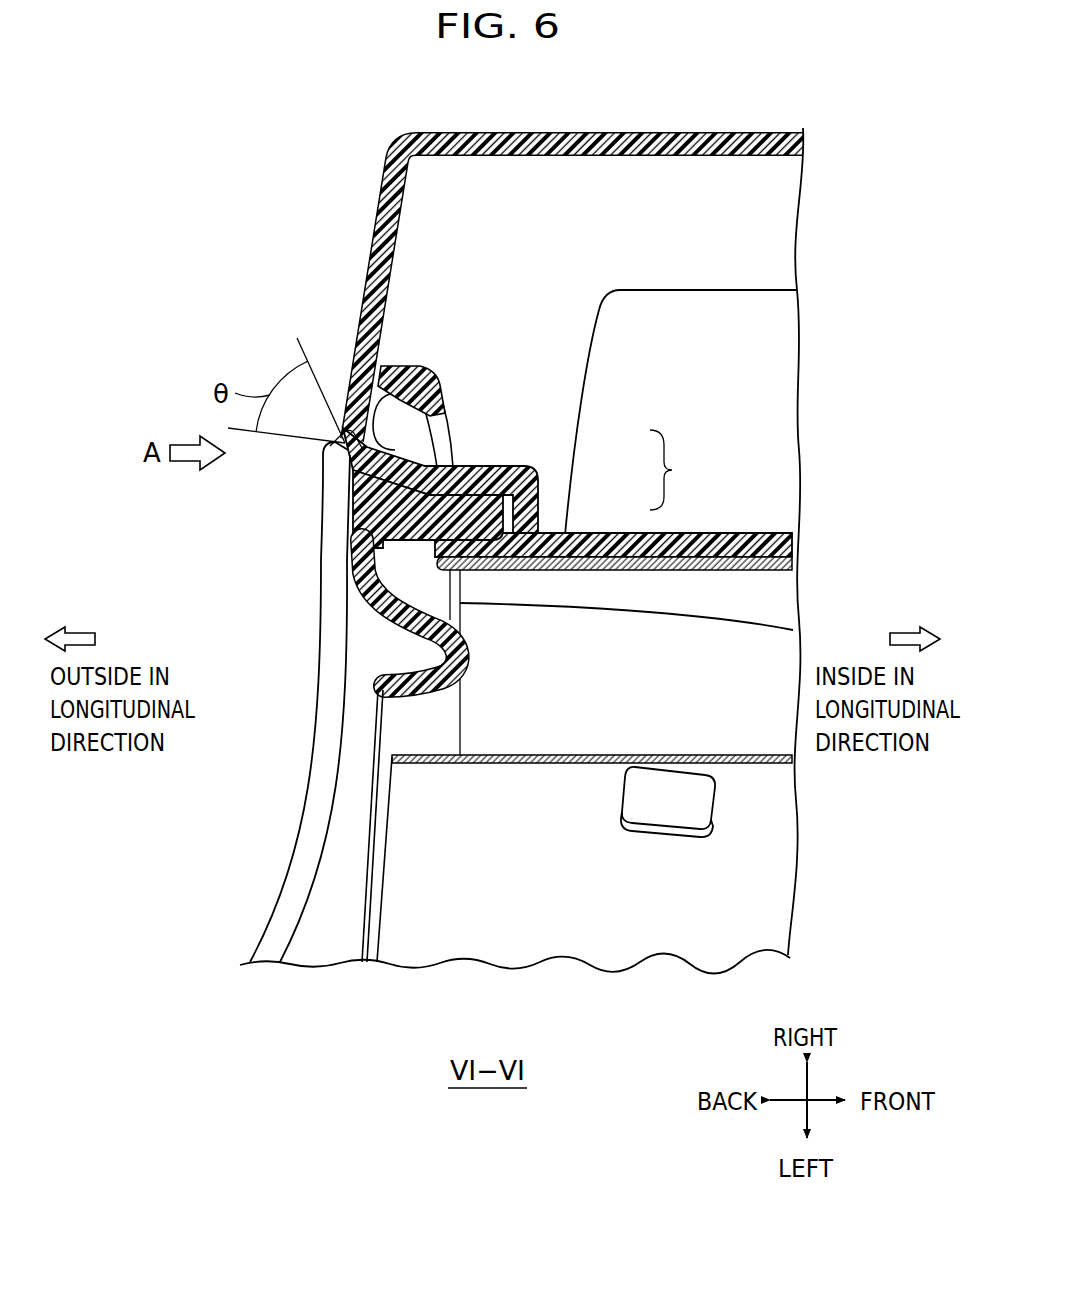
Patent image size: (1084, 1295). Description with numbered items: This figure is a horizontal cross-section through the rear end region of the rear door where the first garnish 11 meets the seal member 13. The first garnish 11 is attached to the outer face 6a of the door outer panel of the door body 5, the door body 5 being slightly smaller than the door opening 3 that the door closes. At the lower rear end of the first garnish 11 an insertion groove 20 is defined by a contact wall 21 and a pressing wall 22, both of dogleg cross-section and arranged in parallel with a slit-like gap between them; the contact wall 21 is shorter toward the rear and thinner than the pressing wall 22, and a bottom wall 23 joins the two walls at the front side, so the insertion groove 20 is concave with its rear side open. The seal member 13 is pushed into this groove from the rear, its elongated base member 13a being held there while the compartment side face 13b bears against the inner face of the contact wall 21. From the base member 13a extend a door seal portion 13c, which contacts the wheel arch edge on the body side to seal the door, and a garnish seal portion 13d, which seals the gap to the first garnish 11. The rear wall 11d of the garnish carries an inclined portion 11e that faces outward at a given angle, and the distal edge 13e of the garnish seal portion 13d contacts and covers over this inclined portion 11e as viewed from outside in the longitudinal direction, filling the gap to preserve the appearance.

The door opening 3 is at (513, 758).
The door body 5 is at (779, 592).
The outer face 6a is at (777, 608).
The first garnish 11 is at (782, 122).
The rear wall 11d is at (353, 383).
The inclined portion 11e is at (335, 440).
The seal member 13 is at (415, 671).
The base member 13a is at (478, 455).
The compartment side face 13b is at (487, 560).
The door seal portion 13c is at (375, 733).
The garnish seal portion 13d is at (320, 603).
The distal edge 13e is at (312, 452).
The insertion groove 20 is at (680, 470).
The contact wall 21 is at (585, 534).
The pressing wall 22 is at (468, 478).
The bottom wall 23 is at (520, 514).